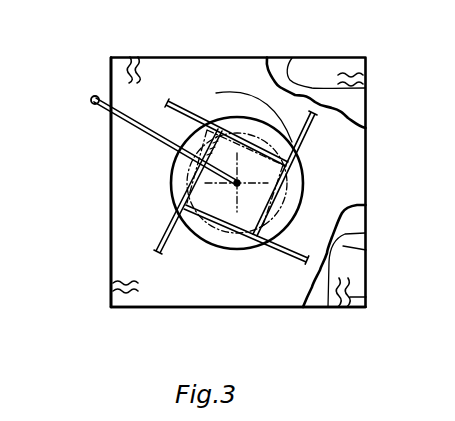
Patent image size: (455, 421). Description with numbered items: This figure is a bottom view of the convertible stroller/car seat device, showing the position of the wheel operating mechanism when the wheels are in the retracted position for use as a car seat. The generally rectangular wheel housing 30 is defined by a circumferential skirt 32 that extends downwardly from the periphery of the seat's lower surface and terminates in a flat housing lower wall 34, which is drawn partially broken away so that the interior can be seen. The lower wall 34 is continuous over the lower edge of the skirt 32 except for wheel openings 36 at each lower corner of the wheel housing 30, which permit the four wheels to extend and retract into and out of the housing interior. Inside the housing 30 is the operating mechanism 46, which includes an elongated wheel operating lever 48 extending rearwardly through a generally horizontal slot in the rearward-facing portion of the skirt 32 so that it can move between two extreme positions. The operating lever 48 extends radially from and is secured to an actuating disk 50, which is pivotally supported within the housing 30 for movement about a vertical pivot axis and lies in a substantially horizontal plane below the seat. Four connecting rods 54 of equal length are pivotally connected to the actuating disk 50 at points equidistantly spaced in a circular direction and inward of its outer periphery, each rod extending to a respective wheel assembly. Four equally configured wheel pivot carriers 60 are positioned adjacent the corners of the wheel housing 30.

The wheel housing 30 is at (366, 108).
The circumferential skirt 32 is at (184, 308).
The housing lower wall 34 is at (276, 68).
The wheel openings 36 is at (290, 60).
The operating mechanism 46 is at (104, 157).
The wheel operating lever 48 is at (93, 96).
The actuating disk 50 is at (173, 188).
The connecting rods 54 is at (214, 95).
The wheel pivot carriers 60 is at (132, 57).